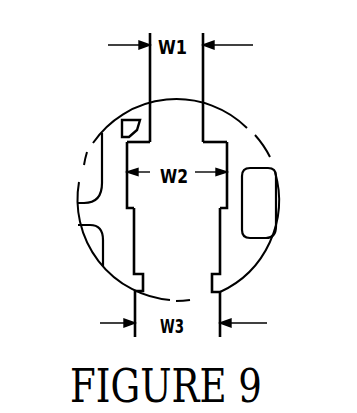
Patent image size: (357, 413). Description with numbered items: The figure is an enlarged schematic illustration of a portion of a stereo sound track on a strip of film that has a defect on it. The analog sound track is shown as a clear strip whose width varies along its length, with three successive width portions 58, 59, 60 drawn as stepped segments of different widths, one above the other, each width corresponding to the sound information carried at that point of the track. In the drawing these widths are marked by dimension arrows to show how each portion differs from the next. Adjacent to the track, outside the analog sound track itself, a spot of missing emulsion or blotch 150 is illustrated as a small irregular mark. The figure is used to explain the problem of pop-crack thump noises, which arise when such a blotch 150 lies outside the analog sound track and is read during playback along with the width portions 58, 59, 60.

The width portion 58 is at (190, 125).
The width portion 59 is at (220, 156).
The width portion 60 is at (202, 245).
The spot of missing emulsion or blotch 150 is at (125, 119).